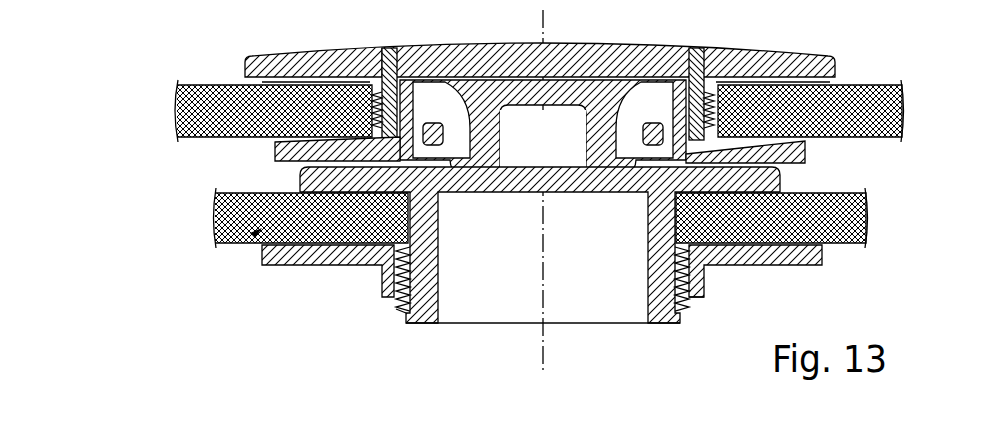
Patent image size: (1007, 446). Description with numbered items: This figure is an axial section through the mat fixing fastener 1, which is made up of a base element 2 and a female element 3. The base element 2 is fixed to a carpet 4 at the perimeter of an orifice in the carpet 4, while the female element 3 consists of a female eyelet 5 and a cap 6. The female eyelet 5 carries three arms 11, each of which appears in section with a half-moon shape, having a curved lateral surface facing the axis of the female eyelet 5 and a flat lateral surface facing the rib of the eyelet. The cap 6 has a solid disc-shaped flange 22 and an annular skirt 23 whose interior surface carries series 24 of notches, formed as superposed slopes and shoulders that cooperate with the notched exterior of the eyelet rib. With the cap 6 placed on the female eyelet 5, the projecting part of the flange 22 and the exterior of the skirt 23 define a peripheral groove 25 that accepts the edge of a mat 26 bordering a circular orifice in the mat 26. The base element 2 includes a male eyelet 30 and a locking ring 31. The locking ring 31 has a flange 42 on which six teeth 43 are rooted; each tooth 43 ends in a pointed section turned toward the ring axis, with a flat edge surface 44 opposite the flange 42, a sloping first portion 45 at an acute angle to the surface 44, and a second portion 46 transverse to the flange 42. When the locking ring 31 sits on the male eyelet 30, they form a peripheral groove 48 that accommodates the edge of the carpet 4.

The mat fixing fastener 1 is at (132, 208).
The base element 2 is at (189, 268).
The female element 3 is at (222, 59).
The carpet 4 is at (867, 223).
The female eyelet 5 is at (795, 148).
The cap 6 is at (619, 44).
The arms 11 is at (447, 125).
The flange 22 is at (318, 50).
The annular skirt 23 is at (703, 48).
The series of notches 24 is at (380, 90).
The peripheral groove 25 is at (770, 56).
The mat 26 is at (178, 137).
The male eyelet 30 is at (297, 188).
The locking ring 31 is at (293, 265).
The flange 42 is at (342, 265).
The teeth 43 is at (393, 300).
The edge surface 44 is at (693, 300).
The first portion 45 is at (668, 296).
The second portion 46 is at (700, 264).
The peripheral groove 48 is at (252, 245).